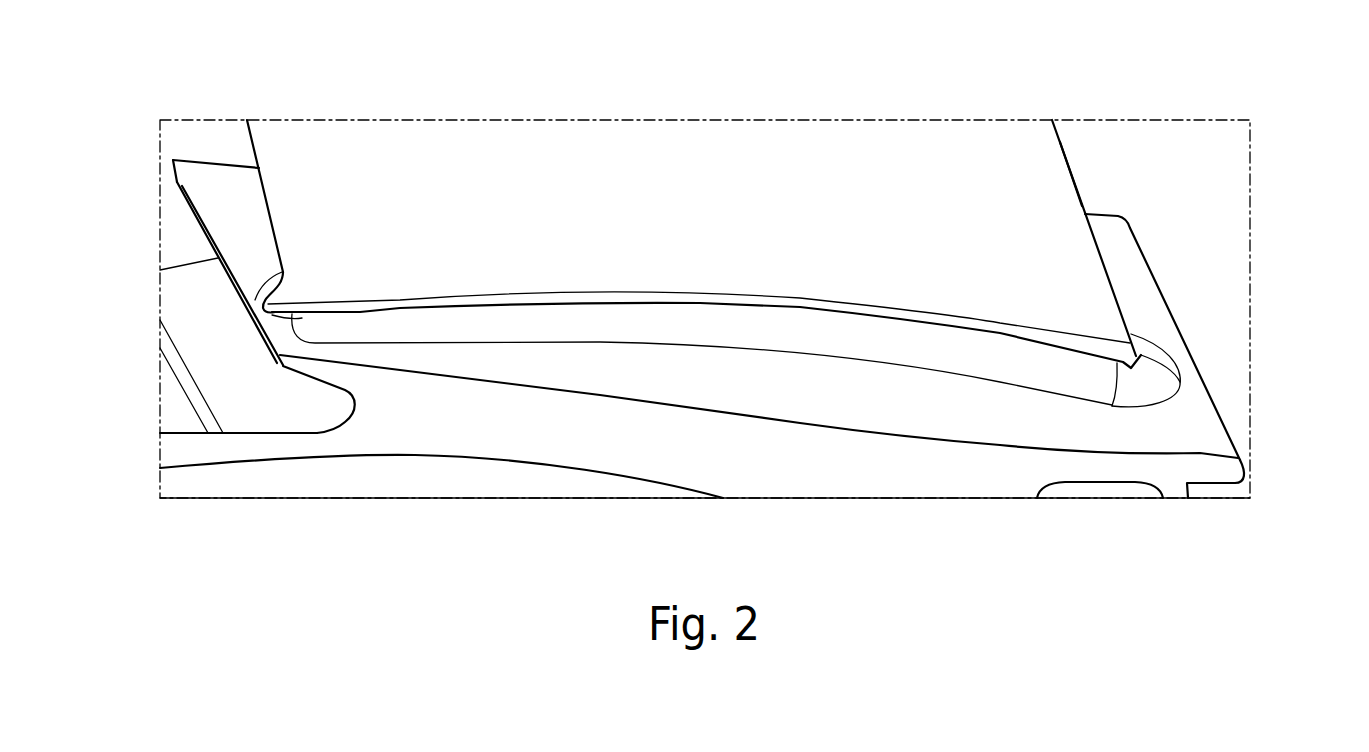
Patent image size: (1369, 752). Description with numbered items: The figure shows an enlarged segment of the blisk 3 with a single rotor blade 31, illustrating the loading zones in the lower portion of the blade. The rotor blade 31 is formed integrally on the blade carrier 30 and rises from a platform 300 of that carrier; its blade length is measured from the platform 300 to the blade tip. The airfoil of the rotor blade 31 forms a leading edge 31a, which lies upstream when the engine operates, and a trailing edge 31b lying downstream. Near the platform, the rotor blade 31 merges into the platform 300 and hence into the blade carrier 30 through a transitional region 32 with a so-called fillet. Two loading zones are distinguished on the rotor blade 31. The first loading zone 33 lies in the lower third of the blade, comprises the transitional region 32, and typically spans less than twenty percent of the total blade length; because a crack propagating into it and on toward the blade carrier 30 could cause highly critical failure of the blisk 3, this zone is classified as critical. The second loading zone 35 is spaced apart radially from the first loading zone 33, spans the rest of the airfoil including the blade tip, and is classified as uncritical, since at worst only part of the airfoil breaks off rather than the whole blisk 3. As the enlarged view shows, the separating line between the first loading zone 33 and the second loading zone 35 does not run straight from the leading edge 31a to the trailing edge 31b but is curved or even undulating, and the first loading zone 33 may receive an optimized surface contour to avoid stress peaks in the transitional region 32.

The blisk 3 is at (1224, 325).
The blade carrier 30 is at (1014, 502).
The platform 300 is at (1192, 417).
The rotor blade 31 is at (1086, 160).
The leading edge 31a is at (1077, 190).
The trailing edge 31b is at (252, 150).
The transitional region 32 is at (263, 310).
The first loading zone 33 is at (660, 303).
The second loading zone 35 is at (903, 140).